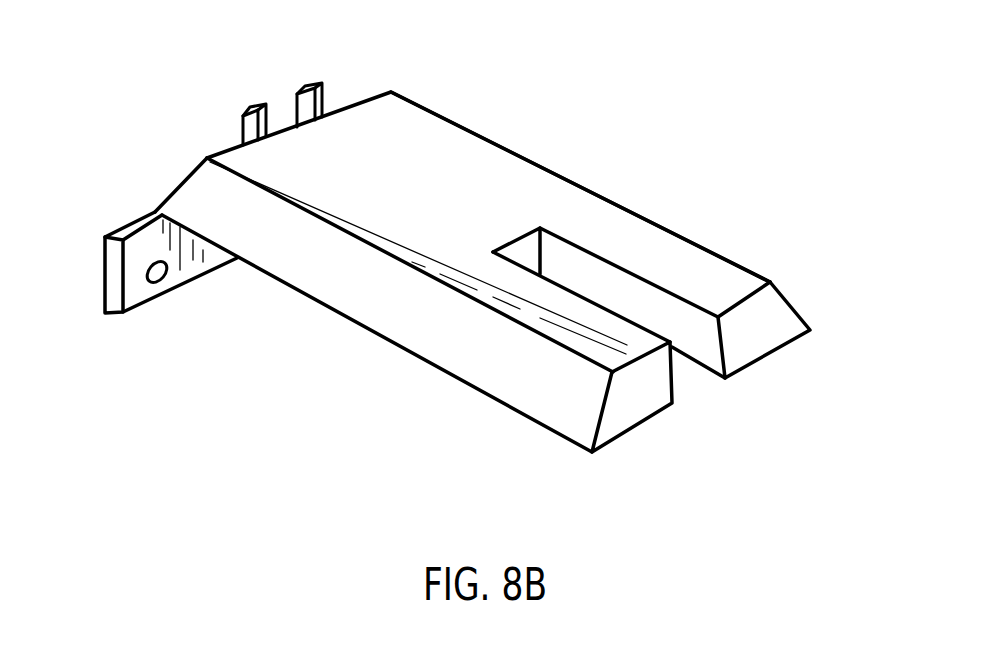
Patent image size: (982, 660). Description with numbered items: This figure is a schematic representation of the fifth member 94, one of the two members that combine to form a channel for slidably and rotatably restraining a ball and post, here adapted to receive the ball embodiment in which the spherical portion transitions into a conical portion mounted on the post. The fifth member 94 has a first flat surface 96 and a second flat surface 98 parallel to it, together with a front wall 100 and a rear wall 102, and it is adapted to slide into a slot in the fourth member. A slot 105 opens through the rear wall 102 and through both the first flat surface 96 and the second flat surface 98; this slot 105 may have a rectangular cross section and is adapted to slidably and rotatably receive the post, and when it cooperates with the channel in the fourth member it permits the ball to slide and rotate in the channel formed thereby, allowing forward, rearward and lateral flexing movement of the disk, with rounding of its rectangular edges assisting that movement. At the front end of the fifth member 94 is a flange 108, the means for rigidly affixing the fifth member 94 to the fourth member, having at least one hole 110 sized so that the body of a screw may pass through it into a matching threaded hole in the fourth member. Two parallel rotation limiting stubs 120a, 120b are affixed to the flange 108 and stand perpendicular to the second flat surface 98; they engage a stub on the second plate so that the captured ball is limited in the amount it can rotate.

The fifth member 94 is at (440, 168).
The first flat surface 96 is at (473, 387).
The second flat surface 98 is at (395, 120).
The front wall 100 is at (181, 184).
The rear wall 102 is at (648, 398).
The slot 105 is at (695, 372).
The flange 108 is at (133, 270).
The hole 110 is at (167, 274).
The rotation limiting stub 120a is at (252, 110).
The rotation limiting stub 120b is at (307, 83).